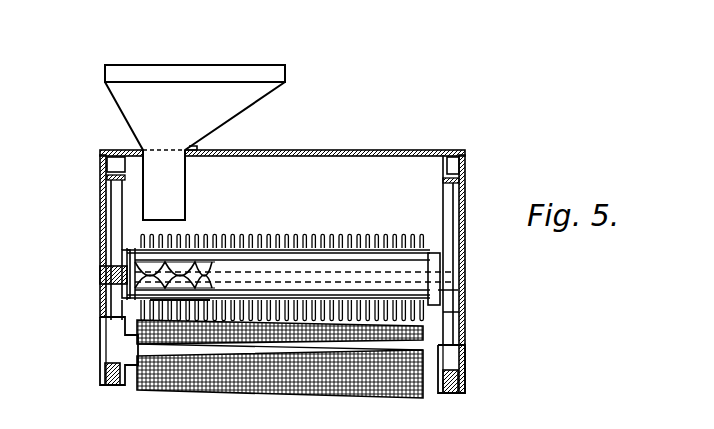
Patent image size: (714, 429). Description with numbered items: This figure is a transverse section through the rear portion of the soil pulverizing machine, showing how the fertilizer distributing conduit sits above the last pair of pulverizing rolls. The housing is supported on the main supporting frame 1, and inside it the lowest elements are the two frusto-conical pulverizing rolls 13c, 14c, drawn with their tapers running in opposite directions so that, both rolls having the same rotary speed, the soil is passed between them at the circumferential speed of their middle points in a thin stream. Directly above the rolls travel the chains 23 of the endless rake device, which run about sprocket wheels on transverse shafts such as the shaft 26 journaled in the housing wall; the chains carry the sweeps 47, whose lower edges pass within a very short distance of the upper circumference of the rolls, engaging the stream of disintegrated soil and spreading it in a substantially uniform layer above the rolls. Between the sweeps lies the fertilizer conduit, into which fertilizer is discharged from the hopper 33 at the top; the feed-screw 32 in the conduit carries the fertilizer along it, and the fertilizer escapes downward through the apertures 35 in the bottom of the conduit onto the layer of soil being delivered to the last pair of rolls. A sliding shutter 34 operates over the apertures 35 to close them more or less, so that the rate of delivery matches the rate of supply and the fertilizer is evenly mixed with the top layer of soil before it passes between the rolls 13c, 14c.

The main supporting frame 1 is at (466, 168).
The chains 23 is at (432, 256).
The shaft 26 is at (100, 272).
The feed-screw 32 is at (172, 262).
The hopper 33 is at (195, 142).
The sliding shutter 34 is at (168, 299).
The apertures 35 is at (212, 282).
The sweeps 47 is at (322, 238).
The pulverizing roll 13c is at (192, 389).
The pulverizing roll 14c is at (394, 397).